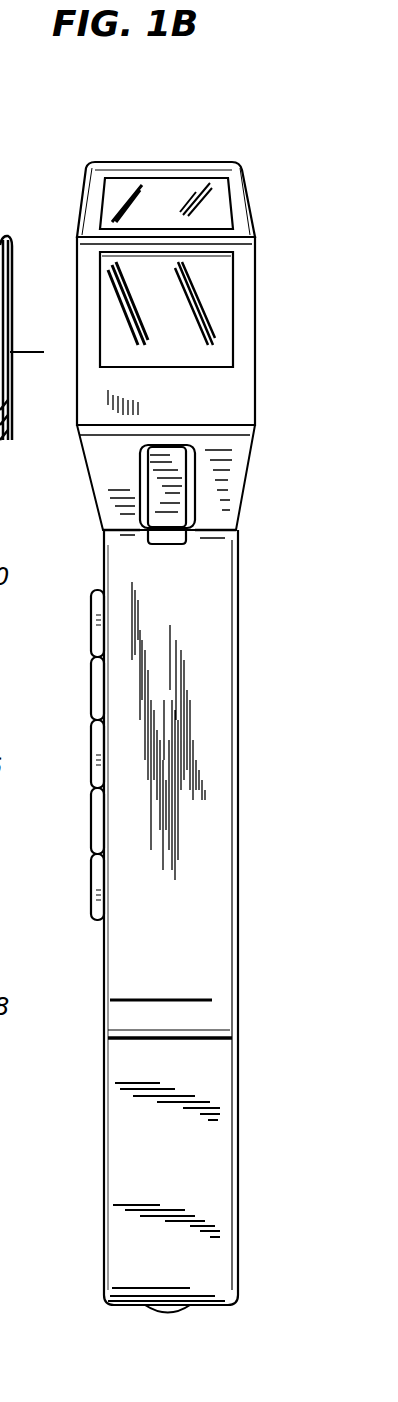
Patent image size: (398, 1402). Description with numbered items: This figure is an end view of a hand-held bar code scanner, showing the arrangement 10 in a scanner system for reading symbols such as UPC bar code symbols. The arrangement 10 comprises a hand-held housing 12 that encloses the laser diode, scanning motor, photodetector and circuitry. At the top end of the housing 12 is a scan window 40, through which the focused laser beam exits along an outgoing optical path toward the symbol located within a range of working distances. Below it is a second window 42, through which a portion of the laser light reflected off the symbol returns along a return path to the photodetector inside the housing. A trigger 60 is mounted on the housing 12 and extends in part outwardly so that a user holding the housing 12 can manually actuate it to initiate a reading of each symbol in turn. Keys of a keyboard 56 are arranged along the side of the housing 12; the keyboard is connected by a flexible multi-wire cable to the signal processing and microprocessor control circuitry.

The arrangement 10 is at (70, 211).
The hand-held housing 12 is at (77, 262).
The scan window 40 is at (172, 218).
The second window 42 is at (10, 317).
The keyboard 56 is at (96, 695).
The trigger 60 is at (165, 488).